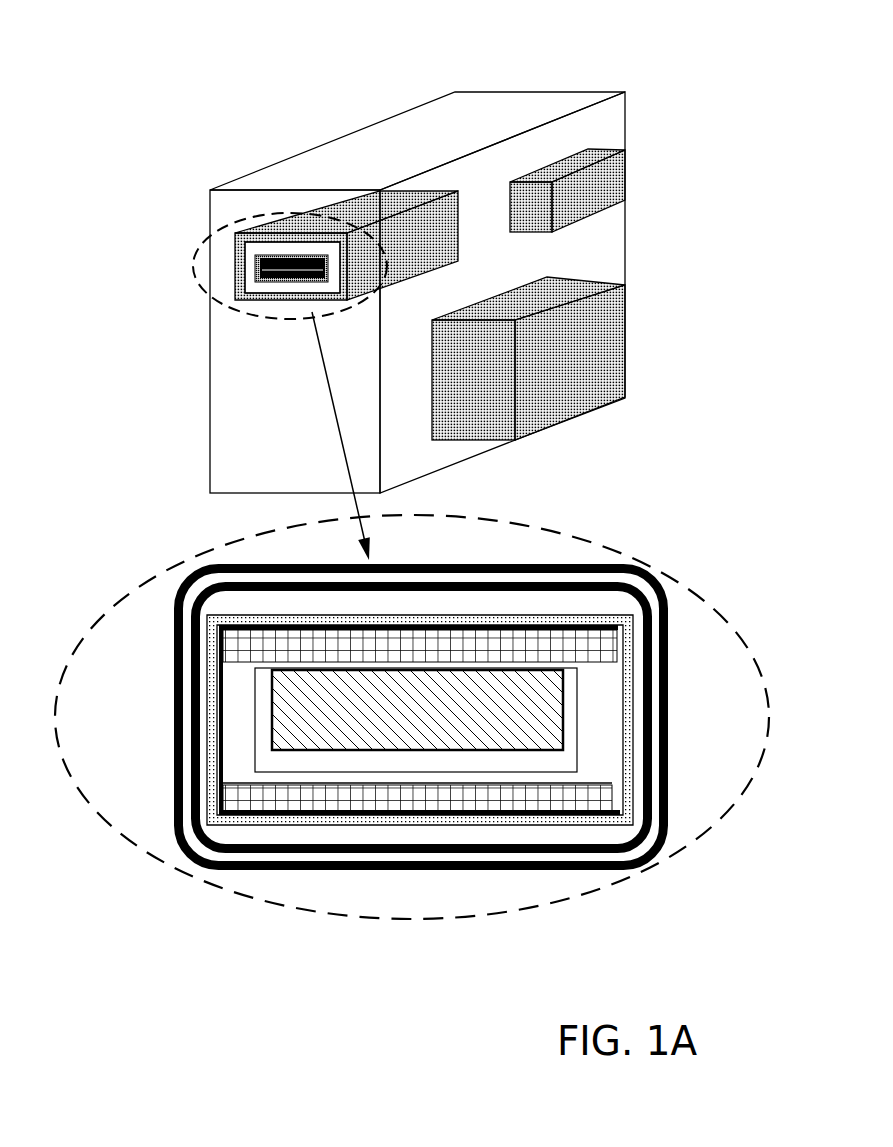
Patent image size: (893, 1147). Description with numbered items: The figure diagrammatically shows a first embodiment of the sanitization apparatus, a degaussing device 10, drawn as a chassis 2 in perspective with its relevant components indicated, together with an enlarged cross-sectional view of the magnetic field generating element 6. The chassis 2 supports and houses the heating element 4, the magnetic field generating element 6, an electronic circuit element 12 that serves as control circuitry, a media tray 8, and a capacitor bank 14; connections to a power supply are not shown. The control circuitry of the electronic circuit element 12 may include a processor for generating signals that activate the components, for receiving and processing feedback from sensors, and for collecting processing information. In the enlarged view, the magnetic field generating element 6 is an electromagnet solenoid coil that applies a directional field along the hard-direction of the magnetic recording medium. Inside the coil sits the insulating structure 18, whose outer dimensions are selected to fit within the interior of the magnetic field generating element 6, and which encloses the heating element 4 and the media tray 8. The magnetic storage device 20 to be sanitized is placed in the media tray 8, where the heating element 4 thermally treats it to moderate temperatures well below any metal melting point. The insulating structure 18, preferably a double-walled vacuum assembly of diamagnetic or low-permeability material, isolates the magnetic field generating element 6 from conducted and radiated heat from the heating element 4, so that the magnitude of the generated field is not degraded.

The degaussing device 10 is at (172, 72).
The chassis 2 is at (500, 92).
The magnetic field generating element 6 is at (343, 207).
The electronic circuit element 12 is at (625, 175).
The capacitor bank 14 is at (595, 398).
The heating element 4 is at (232, 785).
The insulating structure 18 is at (622, 703).
The media tray 8 is at (530, 765).
The magnetic storage device 20 is at (431, 719).